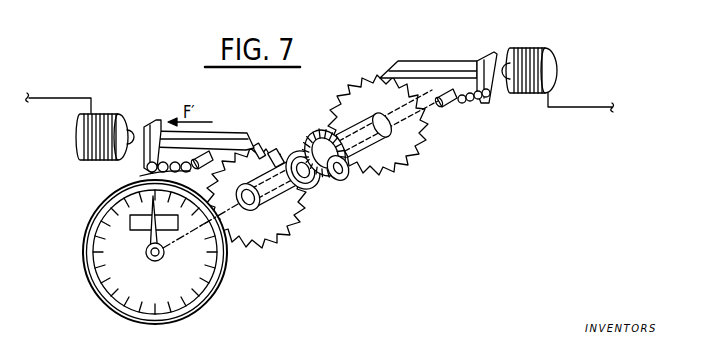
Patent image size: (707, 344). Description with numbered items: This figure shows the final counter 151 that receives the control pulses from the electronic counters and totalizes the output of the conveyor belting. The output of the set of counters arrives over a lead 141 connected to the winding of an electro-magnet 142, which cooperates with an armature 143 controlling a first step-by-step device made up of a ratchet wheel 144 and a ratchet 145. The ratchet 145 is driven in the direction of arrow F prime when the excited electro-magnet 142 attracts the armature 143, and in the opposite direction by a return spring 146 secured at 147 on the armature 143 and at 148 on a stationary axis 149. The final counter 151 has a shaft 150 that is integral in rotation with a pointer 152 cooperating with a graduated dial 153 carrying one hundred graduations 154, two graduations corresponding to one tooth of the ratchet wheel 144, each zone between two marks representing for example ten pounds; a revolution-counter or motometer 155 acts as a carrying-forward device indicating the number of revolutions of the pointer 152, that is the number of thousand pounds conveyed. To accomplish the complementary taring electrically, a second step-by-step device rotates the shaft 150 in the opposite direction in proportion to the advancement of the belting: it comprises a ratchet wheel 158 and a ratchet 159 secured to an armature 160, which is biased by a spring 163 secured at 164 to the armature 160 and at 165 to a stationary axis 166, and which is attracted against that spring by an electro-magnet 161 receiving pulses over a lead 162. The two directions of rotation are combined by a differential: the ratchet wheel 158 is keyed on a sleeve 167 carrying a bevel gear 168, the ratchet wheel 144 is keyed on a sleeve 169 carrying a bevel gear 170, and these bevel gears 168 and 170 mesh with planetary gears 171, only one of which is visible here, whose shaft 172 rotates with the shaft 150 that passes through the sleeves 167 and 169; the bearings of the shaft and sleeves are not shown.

The lead 141 is at (58, 96).
The electro-magnet 142 is at (90, 140).
The armature 143 is at (150, 122).
The ratchet wheel 144 is at (268, 149).
The ratchet 145 is at (218, 138).
The return spring 146 is at (150, 178).
The spring attachment point on armature 147 is at (149, 164).
The spring attachment point on stationary axis 148 is at (201, 163).
The stationary axis 149 is at (197, 167).
The shaft 150 is at (242, 212).
The final counter 151 is at (162, 259).
The pointer 152 is at (146, 237).
The graduated dial 153 is at (117, 312).
The graduations 154 is at (122, 295).
The revolution-counter or motometer 155 is at (130, 222).
The ratchet wheel 158 is at (357, 110).
The ratchet 159 is at (437, 67).
The armature 160 is at (487, 66).
The electro-magnet 161 is at (535, 58).
The lead 162 is at (581, 101).
The spring 163 is at (478, 98).
The spring attachment point on armature 164 is at (489, 94).
The spring attachment point on stationary axis 165 is at (461, 101).
The stationary axis 166 is at (444, 102).
The sleeve 167 is at (375, 138).
The bevel gear 168 is at (318, 136).
The sleeve 169 is at (308, 180).
The bevel gear 170 is at (312, 190).
The planetary gear 171 is at (341, 179).
The shaft of planetary gears 172 is at (348, 173).